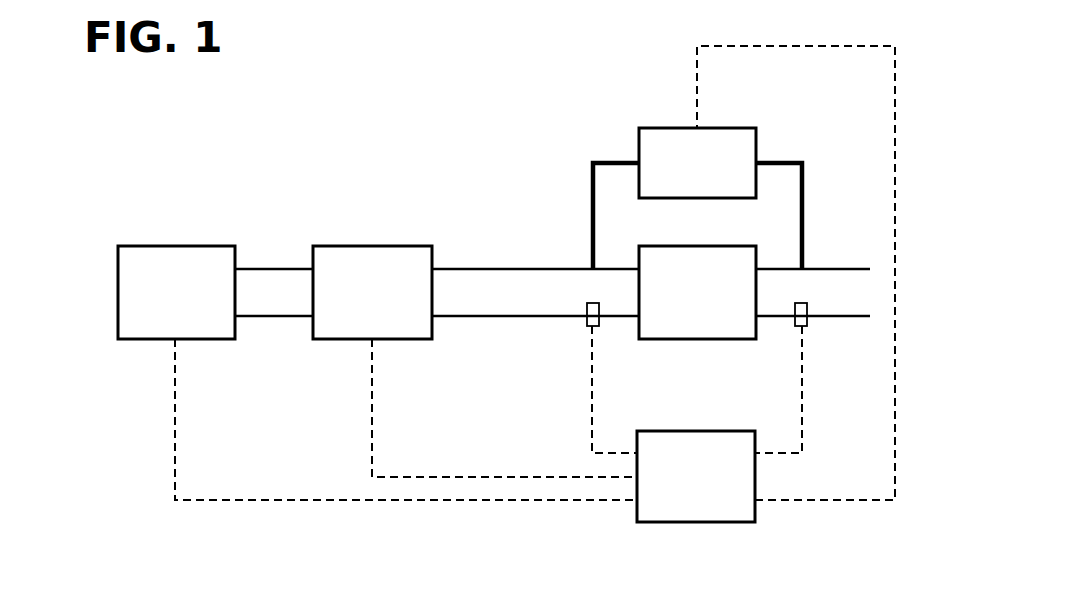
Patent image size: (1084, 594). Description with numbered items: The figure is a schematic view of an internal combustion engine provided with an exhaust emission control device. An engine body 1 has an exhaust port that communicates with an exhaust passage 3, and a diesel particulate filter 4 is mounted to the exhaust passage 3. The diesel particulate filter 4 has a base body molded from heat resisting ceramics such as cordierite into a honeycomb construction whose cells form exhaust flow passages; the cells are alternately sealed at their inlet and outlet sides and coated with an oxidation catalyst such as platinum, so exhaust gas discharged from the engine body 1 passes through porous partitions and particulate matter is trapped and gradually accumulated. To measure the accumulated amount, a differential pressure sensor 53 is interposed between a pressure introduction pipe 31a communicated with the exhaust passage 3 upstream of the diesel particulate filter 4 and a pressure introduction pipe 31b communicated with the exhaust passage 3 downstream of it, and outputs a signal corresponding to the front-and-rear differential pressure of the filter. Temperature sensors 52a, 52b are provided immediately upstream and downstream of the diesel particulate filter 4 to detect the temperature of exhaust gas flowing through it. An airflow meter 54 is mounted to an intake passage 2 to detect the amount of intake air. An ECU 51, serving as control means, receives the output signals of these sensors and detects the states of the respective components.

The engine body 1 is at (372, 246).
The intake passage 2 is at (270, 269).
The exhaust passage 3 is at (490, 269).
The diesel particulate filter 4 is at (698, 339).
The pressure introduction pipe 31a is at (606, 163).
The pressure introduction pipe 31b is at (780, 163).
The ECU 51 is at (718, 522).
The temperature sensor 52a is at (586, 324).
The temperature sensor 52b is at (808, 324).
The differential pressure sensor 53 is at (656, 128).
The airflow meter 54 is at (174, 246).